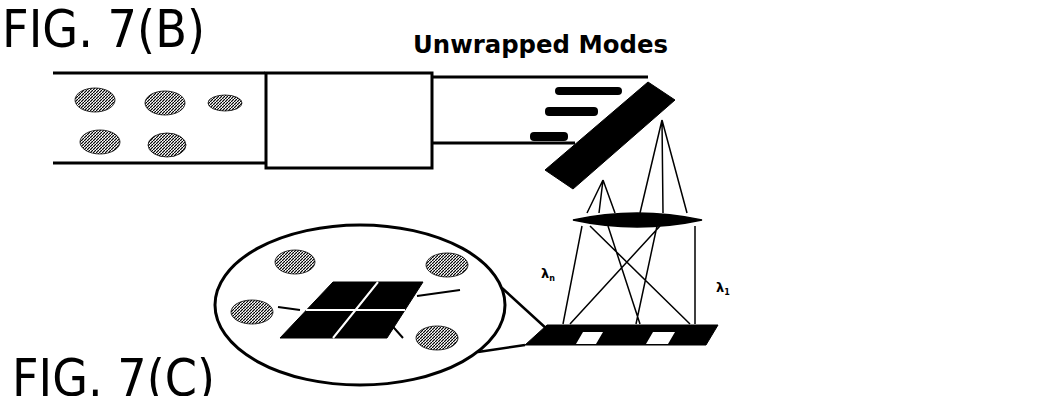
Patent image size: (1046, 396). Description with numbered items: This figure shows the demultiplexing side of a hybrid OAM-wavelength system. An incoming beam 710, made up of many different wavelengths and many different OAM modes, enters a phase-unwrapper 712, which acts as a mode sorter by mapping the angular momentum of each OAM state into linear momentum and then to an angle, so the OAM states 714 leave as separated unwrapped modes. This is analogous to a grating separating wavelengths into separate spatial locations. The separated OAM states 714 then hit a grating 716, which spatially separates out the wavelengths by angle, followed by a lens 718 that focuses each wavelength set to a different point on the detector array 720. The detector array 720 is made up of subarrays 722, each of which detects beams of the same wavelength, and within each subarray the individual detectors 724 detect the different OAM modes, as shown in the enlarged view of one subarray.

The incoming beam 710 is at (159, 118).
The phase-unwrapper 712 is at (349, 120).
The OAM states 714 is at (540, 110).
The grating 716 is at (673, 135).
The lens 718 is at (716, 218).
The detector array 720 is at (711, 359).
The subarrays 722 is at (381, 310).
The individual detectors 724 is at (333, 282).